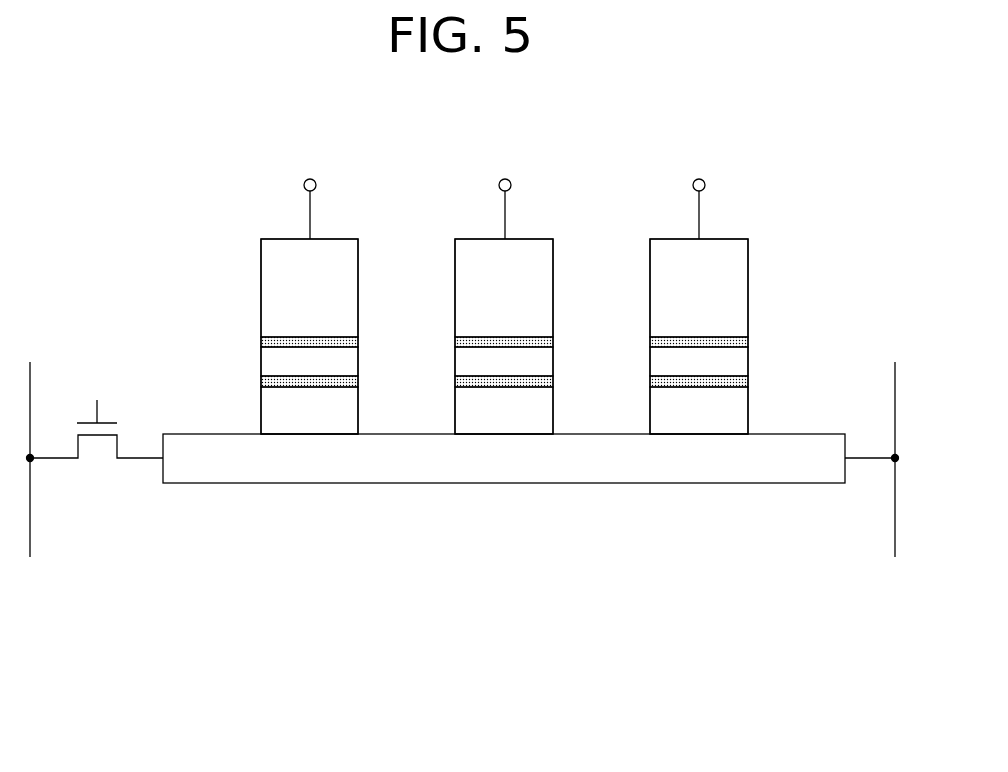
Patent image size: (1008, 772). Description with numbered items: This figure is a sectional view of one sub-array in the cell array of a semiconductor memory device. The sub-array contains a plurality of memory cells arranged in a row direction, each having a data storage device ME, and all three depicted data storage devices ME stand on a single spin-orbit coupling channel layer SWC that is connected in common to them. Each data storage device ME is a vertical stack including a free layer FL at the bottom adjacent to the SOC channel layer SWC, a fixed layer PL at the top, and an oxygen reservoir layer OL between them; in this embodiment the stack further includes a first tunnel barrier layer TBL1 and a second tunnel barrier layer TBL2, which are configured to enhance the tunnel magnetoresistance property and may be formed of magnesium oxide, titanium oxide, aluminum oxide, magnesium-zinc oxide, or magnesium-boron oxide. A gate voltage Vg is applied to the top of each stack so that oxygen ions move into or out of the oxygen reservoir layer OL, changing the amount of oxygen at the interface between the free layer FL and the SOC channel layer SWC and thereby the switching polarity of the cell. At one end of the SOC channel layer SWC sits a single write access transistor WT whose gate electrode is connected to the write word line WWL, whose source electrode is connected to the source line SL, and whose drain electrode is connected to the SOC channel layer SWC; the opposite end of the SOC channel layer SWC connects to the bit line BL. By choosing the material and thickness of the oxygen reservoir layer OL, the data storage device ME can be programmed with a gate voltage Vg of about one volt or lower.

The data storage device ME is at (160, 275).
The fixed layer PL is at (272, 290).
The second tunnel barrier layer TBL2 is at (262, 341).
The oxygen reservoir layer OL is at (272, 362).
The first tunnel barrier layer TBL1 is at (262, 381).
The free layer FL is at (272, 414).
The gate voltage Vg is at (505, 190).
The spin-orbit coupling channel layer SWC is at (504, 483).
The source line SL is at (29, 443).
The bit line BL is at (876, 443).
The write access transistor WT is at (100, 445).
The write word line WWL is at (96, 395).